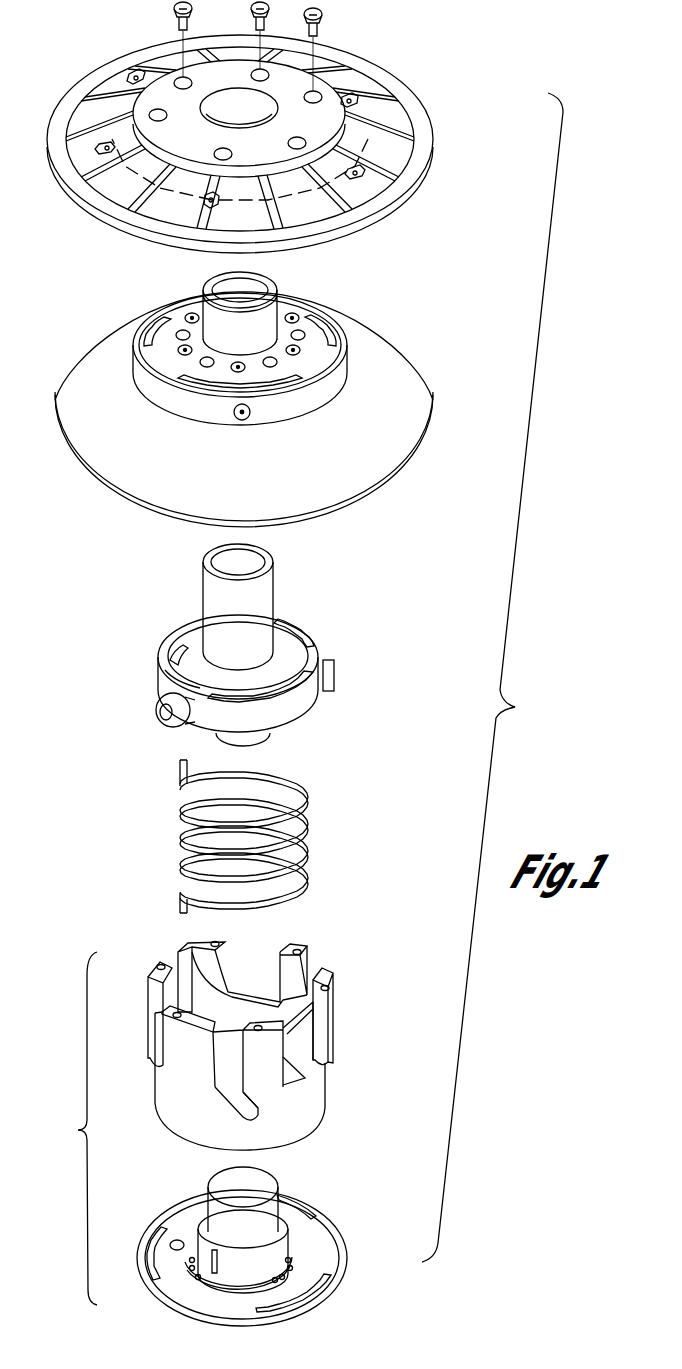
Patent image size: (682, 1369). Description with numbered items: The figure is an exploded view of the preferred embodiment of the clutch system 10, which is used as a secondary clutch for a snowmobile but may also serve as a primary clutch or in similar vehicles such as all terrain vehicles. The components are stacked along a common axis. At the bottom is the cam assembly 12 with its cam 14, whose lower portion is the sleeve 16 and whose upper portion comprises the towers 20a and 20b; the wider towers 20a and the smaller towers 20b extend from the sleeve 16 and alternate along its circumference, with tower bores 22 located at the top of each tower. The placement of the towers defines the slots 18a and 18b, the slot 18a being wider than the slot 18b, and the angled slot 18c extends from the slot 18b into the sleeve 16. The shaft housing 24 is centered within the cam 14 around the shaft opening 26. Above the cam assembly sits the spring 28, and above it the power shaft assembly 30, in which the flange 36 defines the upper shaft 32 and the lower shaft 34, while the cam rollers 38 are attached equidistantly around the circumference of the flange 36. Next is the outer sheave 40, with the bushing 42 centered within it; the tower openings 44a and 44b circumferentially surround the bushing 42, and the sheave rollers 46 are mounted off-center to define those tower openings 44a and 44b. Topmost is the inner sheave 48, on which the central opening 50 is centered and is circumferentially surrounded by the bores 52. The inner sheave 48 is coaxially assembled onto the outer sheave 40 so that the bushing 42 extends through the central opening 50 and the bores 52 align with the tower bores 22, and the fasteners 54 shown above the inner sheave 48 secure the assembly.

The clutch system 10 is at (492, 677).
The cam assembly 12 is at (71, 1128).
The cam 14 is at (268, 1031).
The sleeve 16 is at (217, 1137).
The slot 18a is at (250, 957).
The slot 18b is at (313, 960).
The slot 18c is at (200, 955).
The tower 20a is at (202, 952).
The tower 20b is at (150, 997).
The tower bore 22 is at (336, 978).
The shaft housing 24 is at (253, 1223).
The shaft opening 26 is at (247, 1183).
The spring 28 is at (300, 783).
The power shaft assembly 30 is at (241, 663).
The upper shaft 32 is at (256, 587).
The lower shaft 34 is at (222, 742).
The flange 36 is at (207, 677).
The cam roller 38 is at (336, 668).
The outer sheave 40 is at (267, 388).
The bushing 42 is at (266, 286).
The tower opening 44a is at (333, 338).
The tower opening 44b is at (150, 334).
The sheave roller 46 is at (163, 321).
The inner sheave 48 is at (440, 146).
The central opening 50 is at (245, 106).
The tower bore 52 is at (150, 113).
The fastener 54 is at (322, 20).